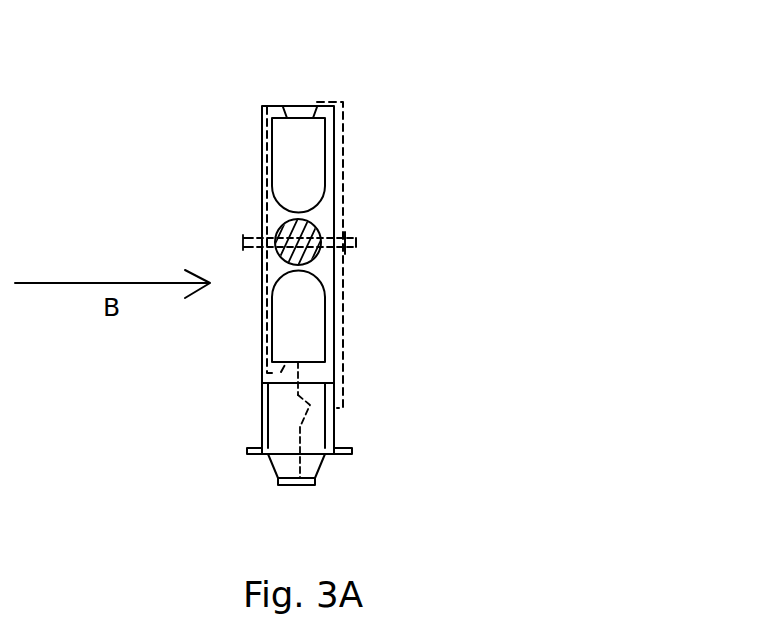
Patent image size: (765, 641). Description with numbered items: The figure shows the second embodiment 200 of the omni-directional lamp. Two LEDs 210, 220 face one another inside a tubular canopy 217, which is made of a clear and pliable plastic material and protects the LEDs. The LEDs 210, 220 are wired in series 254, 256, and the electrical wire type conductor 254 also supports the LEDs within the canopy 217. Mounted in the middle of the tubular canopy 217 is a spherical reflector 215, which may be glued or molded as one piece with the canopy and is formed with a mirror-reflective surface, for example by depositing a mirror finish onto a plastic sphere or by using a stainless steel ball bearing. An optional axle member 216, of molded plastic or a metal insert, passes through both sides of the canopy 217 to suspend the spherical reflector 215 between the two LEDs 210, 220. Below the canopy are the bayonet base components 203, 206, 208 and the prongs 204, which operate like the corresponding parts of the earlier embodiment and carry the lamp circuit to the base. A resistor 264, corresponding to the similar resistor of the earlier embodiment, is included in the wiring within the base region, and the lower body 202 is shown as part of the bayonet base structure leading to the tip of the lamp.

The second embodiment 200 is at (387, 83).
The nozzle body 202 is at (285, 428).
The bayonet base component 203 is at (258, 419).
The prongs 204 is at (350, 449).
The bayonet base component 206 is at (308, 467).
The bayonet base component 208 is at (302, 485).
The LED 210 is at (308, 155).
The spherical reflector 215 is at (320, 227).
The axle member 216 is at (340, 243).
The tubular canopy 217 is at (260, 223).
The LED 220 is at (300, 315).
The electrical wire type conductor 254 is at (277, 100).
The series wiring 256 is at (340, 185).
The resistor 264 is at (308, 412).